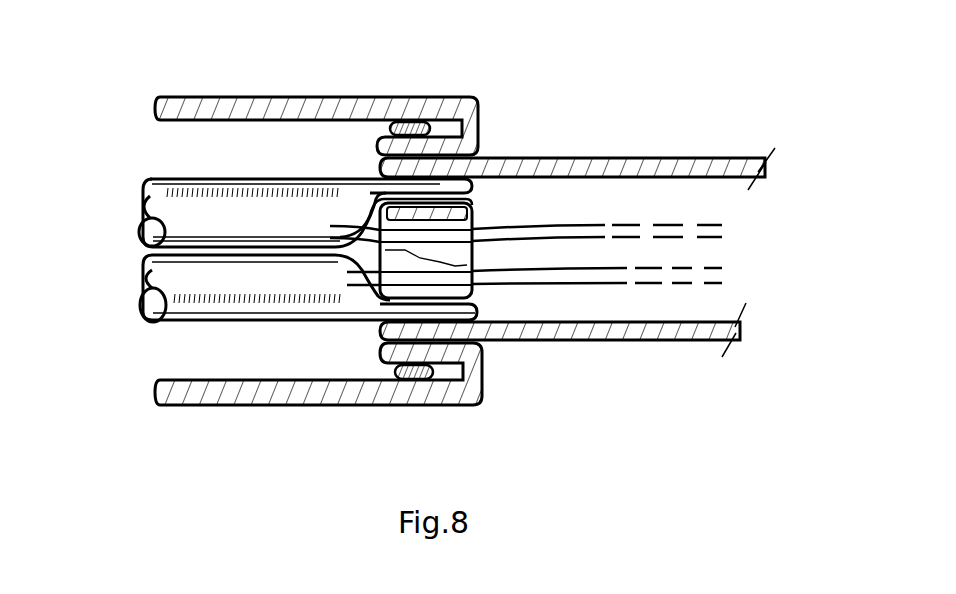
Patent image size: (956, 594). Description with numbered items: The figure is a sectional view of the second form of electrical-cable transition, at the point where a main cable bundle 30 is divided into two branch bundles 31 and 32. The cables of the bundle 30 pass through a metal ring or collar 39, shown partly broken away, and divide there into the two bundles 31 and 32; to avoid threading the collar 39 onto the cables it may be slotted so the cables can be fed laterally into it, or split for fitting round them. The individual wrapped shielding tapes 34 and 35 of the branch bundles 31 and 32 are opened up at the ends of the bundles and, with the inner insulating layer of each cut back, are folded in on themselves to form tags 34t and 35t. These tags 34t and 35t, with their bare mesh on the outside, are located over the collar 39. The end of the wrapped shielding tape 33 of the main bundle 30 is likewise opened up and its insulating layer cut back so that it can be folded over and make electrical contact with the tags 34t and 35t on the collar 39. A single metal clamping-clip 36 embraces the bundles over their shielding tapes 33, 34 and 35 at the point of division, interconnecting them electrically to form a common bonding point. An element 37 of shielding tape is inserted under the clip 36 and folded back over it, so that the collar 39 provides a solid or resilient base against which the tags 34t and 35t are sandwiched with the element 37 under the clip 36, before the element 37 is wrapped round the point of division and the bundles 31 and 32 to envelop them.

The main cable bundle 30 is at (717, 149).
The branch bundle 31 is at (162, 171).
The branch bundle 32 is at (181, 331).
The wrapped shielding tape 33 is at (653, 341).
The wrapped shielding tape 34 is at (147, 197).
The tag 34t is at (376, 190).
The wrapped shielding tape 35 is at (153, 275).
The tag 35t is at (368, 323).
The metal clamping-clip 36 is at (444, 124).
The element of shielding tape 37 is at (281, 95).
The metal ring or collar 39 is at (471, 228).